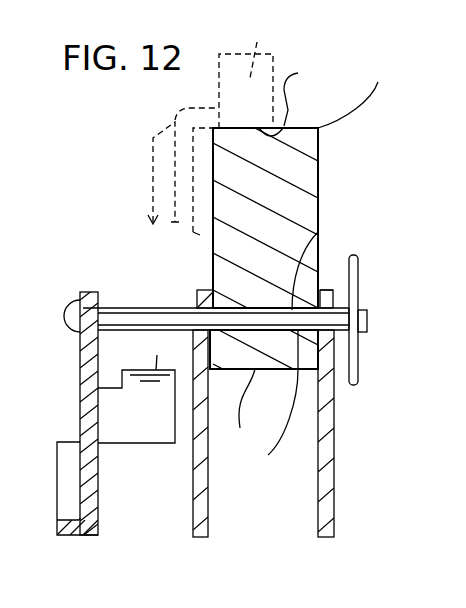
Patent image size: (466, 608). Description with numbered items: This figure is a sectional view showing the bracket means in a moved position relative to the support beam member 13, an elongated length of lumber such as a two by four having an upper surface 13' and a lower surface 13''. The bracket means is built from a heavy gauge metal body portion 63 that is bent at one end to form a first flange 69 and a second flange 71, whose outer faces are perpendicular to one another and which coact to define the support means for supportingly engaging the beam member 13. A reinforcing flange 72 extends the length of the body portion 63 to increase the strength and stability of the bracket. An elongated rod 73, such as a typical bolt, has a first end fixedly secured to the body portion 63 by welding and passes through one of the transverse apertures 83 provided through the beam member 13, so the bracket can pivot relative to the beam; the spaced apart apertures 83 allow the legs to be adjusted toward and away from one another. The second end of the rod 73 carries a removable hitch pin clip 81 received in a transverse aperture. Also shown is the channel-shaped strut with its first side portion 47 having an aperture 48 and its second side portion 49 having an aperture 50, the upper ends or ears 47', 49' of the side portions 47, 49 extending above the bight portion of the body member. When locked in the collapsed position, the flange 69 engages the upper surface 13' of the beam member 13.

The support beam member 13 is at (300, 244).
The upper surface 13' is at (349, 96).
The lower surface 13'' is at (261, 403).
The first side portion 47 is at (168, 433).
The ear of first side portion 47' is at (186, 273).
The aperture 48 is at (186, 308).
The second side portion 49 is at (358, 433).
The ear of second side portion 49' is at (368, 263).
The aperture 50 is at (327, 290).
The body portion 63 is at (80, 395).
The first flange 69 is at (129, 421).
The second flange 71 is at (257, 40).
The reinforcing flange 72 is at (60, 530).
The rod 73 is at (356, 258).
The hitch pin clip 81 is at (358, 352).
The transverse apertures 83 is at (268, 455).